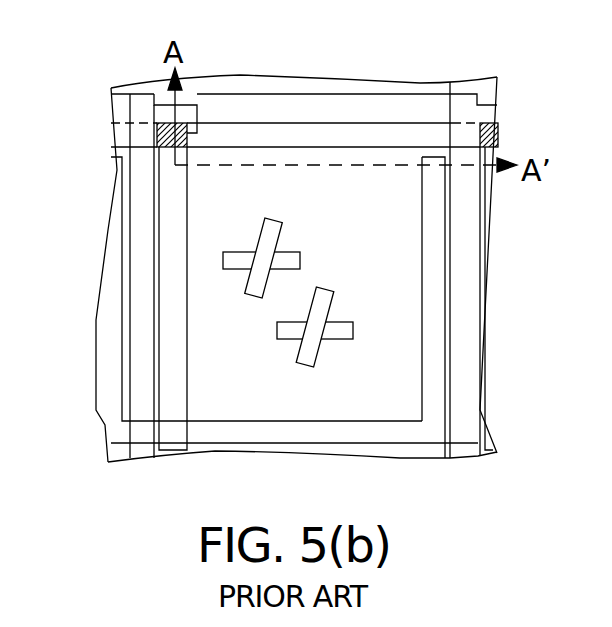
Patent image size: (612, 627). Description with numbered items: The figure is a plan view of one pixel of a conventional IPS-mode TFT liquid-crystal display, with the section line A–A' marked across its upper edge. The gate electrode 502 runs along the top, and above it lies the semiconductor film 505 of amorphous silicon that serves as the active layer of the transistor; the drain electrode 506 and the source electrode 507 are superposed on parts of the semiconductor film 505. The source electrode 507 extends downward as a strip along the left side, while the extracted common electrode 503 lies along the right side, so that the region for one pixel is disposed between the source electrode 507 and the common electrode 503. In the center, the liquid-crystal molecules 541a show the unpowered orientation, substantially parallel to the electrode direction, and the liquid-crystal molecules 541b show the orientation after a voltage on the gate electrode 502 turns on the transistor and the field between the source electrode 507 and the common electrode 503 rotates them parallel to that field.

The gate electrode 502 is at (268, 133).
The common electrode 503 is at (397, 90).
The semiconductor film 505 is at (157, 133).
The drain electrode 506 is at (165, 119).
The source electrode 507 is at (177, 217).
The liquid-crystal molecules 541a is at (322, 297).
The liquid-crystal molecules 541b is at (232, 267).